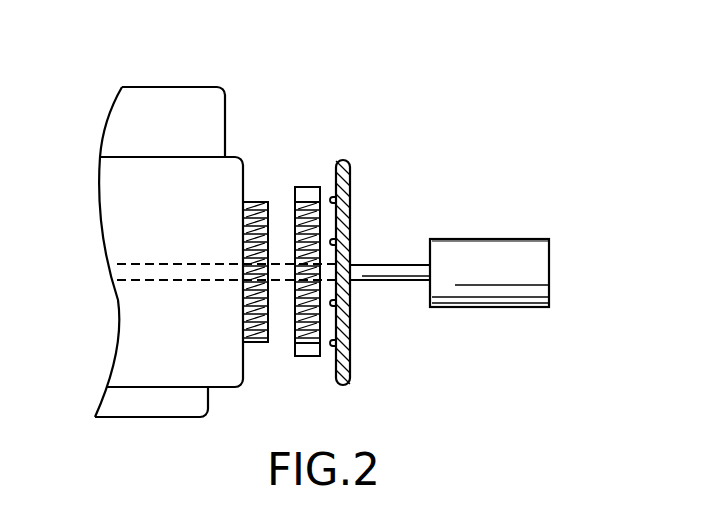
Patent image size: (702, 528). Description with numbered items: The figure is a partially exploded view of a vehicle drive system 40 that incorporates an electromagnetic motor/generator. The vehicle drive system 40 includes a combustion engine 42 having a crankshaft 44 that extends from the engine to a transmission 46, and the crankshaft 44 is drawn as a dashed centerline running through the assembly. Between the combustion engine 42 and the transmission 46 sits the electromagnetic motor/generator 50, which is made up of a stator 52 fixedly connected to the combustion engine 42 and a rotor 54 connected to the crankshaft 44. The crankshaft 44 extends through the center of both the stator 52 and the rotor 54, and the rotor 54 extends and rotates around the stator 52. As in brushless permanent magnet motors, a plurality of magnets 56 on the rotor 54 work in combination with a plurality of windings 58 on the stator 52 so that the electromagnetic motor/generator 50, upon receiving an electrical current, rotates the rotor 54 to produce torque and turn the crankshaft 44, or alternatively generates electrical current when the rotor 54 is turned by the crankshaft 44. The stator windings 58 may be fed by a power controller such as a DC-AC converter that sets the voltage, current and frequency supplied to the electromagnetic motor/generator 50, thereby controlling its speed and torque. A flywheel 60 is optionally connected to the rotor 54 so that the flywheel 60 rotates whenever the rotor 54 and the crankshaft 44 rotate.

The vehicle drive system 40 is at (463, 113).
The combustion engine 42 is at (243, 155).
The crankshaft 44 is at (188, 263).
The transmission 46 is at (480, 238).
The electromagnetic motor/generator 50 is at (295, 155).
The stator 52 is at (255, 202).
The rotor 54 is at (315, 358).
The magnets 56 is at (316, 200).
The windings 58 is at (271, 327).
The flywheel 60 is at (351, 212).